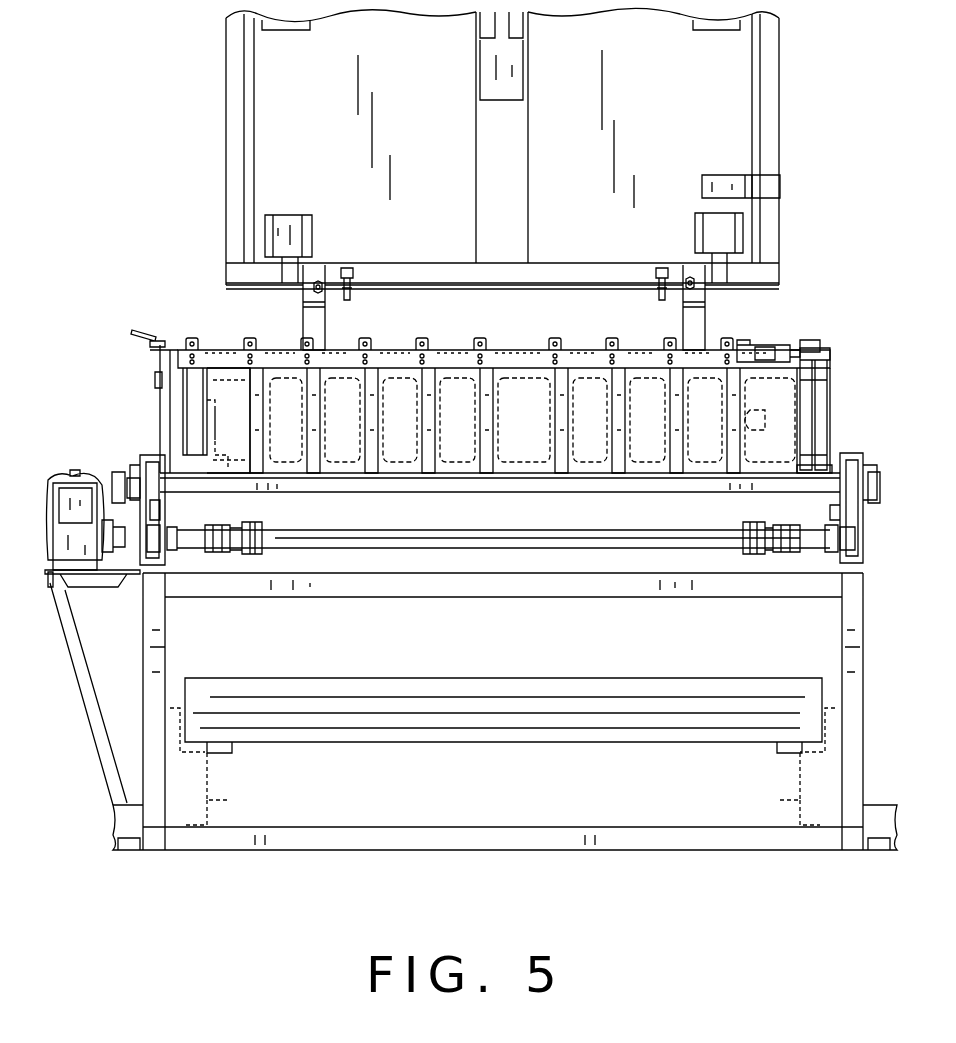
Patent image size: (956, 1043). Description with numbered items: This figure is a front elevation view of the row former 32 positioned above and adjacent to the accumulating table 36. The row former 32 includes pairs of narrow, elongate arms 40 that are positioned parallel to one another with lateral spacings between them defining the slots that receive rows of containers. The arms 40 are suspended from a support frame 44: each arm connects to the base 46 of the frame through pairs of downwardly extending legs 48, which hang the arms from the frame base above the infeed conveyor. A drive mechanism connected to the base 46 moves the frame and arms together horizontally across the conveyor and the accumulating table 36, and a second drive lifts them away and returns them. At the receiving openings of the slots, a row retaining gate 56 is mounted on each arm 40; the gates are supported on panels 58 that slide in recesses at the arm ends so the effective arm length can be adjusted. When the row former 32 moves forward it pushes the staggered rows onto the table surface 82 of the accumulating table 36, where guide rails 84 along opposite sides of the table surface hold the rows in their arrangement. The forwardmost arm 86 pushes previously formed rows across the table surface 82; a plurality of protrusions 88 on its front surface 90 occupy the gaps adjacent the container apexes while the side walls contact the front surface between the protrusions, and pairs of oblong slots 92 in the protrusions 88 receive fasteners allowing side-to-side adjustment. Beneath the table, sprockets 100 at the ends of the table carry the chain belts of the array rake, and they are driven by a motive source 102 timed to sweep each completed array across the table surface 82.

The row former 32 is at (162, 290).
The accumulating table 36 is at (153, 462).
The arm 40 is at (512, 405).
The support frame 44 is at (212, 101).
The base 46 is at (305, 283).
The leg 48 is at (320, 320).
The row retaining gate 56 is at (825, 408).
The panel 58 is at (790, 345).
The table surface 82 is at (232, 470).
The guide rail 84 is at (150, 468).
The forwardmost arm 86 is at (228, 400).
The protrusion 88 is at (180, 365).
The front surface 90 is at (280, 405).
The oblong slot 92 is at (365, 345).
The sprocket 100 is at (140, 482).
The motive source 102 is at (62, 510).